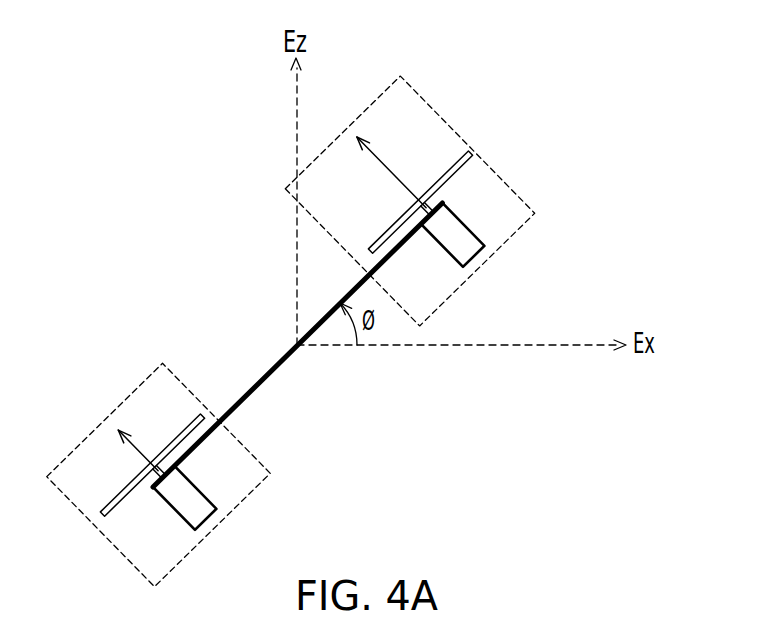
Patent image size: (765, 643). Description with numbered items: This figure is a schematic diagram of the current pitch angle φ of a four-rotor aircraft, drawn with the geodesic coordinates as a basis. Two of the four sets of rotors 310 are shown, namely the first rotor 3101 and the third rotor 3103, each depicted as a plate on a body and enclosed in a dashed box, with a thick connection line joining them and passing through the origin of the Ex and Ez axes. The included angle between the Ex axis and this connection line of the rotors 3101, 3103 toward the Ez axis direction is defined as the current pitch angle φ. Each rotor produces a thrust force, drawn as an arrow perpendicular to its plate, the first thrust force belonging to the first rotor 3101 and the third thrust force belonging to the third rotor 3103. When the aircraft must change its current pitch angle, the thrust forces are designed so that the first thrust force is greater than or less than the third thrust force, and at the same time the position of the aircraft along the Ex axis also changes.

The rotors 310 is at (295, 331).
The rotor 3101 is at (508, 184).
The rotor 3103 is at (73, 450).